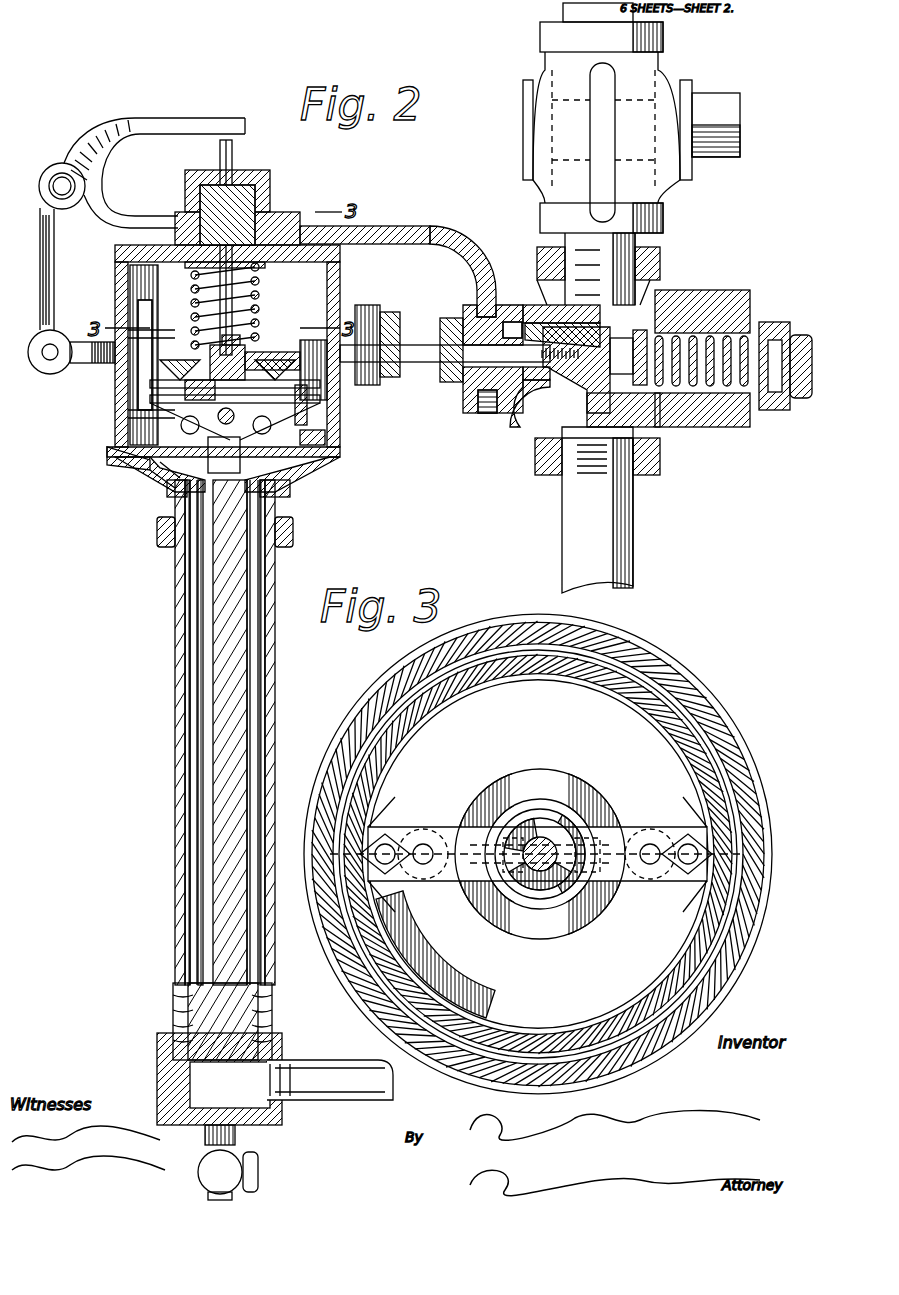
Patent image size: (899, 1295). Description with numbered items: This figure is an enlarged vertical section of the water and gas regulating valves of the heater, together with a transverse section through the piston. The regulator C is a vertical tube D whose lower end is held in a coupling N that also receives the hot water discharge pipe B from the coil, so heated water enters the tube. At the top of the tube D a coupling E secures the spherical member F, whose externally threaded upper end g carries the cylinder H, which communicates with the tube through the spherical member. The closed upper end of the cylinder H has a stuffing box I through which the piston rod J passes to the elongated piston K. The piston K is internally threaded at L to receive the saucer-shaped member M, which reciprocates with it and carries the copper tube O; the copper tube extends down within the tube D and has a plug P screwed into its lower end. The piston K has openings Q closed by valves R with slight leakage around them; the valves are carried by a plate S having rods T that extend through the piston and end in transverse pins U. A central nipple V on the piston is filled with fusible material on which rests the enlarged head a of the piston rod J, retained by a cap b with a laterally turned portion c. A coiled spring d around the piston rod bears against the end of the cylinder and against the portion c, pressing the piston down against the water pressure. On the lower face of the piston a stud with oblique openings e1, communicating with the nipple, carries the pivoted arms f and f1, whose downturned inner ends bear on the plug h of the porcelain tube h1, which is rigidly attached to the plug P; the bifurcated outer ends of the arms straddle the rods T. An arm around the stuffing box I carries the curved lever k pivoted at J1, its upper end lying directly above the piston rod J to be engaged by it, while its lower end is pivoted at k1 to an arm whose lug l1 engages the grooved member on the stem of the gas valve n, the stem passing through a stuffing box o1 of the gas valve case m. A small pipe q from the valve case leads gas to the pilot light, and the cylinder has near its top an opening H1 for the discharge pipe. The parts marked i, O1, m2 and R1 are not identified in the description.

In FIG. 2, the curved lever k is at (100, 150).
In FIG. 2, the pivot J1 is at (68, 188).
In FIG. 2, the pivot k1 is at (50, 360).
In FIG. 2, the link bar i is at (80, 365).
In FIG. 2, the rods T is at (128, 372).
In FIG. 3, the rods T is at (392, 840).
In FIG. 2, the internal screw thread L is at (130, 405).
In FIG. 2, the valves R is at (110, 452).
In FIG. 3, the valves R is at (435, 827).
In FIG. 2, the saucer-shaped member M is at (128, 462).
In FIG. 2, the spherical member F is at (150, 470).
In FIG. 2, the arm f is at (165, 478).
In FIG. 2, the external thread g is at (172, 490).
In FIG. 2, the arm f1 is at (290, 478).
In FIG. 2, the piston rod J is at (232, 165).
In FIG. 3, the piston rod J is at (552, 848).
In FIG. 2, the stuffing box I is at (265, 185).
In FIG. 2, the plate S is at (258, 215).
In FIG. 3, the plate S is at (500, 900).
In FIG. 2, the opening H1 is at (380, 234).
In FIG. 2, the enlarged head a is at (262, 266).
In FIG. 2, the coiled spring d is at (192, 272).
In FIG. 3, the coiled spring d is at (560, 808).
In FIG. 2, the cap b is at (242, 338).
In FIG. 3, the cap b is at (537, 870).
In FIG. 2, the nipple V is at (235, 350).
In FIG. 2, the regulator C is at (290, 352).
In FIG. 2, the openings Q is at (196, 392).
In FIG. 2, the transverse pins U is at (320, 386).
In FIG. 2, the cylinder H is at (318, 400).
In FIG. 3, the cylinder H is at (550, 853).
In FIG. 2, the piston K is at (307, 395).
In FIG. 3, the piston K is at (538, 854).
In FIG. 2, the oblique openings e1 is at (226, 429).
In FIG. 2, the laterally turned portion c is at (325, 440).
In FIG. 2, the plug h is at (224, 455).
In FIG. 2, the tube D is at (275, 660).
In FIG. 2, the porcelain tube h1 is at (230, 700).
In FIG. 2, the coupling E is at (293, 528).
In FIG. 2, the copper tube O is at (405, 343).
In FIG. 2, the lug l1 is at (368, 305).
In FIG. 2, the stuffing box o1 is at (390, 312).
In FIG. 2, the rod coupling O1 is at (452, 382).
In FIG. 2, the gas valve case m is at (490, 413).
In FIG. 2, the lower nut m2 is at (480, 413).
In FIG. 2, the valve n is at (562, 445).
In FIG. 2, the spring stem R1 is at (735, 405).
In FIG. 2, the small pipe q is at (605, 112).
In FIG. 2, the plug P is at (238, 1021).
In FIG. 2, the coupling N is at (157, 1050).
In FIG. 2, the pipe B is at (310, 1075).